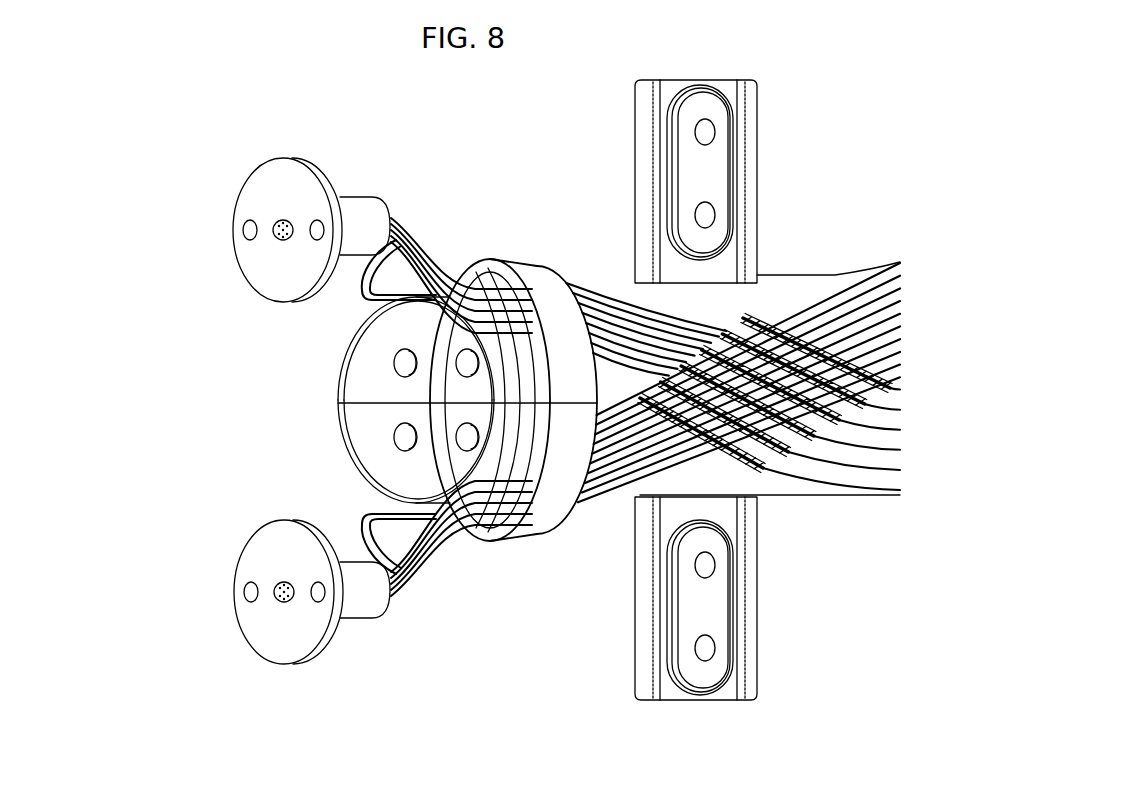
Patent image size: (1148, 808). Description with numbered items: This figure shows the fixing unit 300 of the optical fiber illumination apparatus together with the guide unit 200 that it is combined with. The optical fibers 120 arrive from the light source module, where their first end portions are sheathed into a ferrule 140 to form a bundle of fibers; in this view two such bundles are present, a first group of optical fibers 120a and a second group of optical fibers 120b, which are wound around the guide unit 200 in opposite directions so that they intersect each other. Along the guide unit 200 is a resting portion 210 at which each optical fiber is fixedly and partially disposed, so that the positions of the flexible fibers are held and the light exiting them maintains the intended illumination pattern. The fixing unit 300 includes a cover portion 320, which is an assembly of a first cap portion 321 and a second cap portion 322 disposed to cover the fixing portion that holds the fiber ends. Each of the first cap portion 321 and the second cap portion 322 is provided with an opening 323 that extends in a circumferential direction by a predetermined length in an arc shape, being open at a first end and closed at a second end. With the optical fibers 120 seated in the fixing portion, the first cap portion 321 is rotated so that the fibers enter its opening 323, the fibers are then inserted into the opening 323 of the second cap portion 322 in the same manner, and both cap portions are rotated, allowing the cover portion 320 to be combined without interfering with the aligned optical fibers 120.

The ferrule 140 is at (275, 183).
The optical fibers 120 is at (441, 397).
The first group of optical fibers 120a is at (403, 577).
The second group of optical fibers 120b is at (405, 230).
The fixing unit 300 is at (518, 253).
The cover portion 320 is at (346, 447).
The first cap portion 321 is at (362, 368).
The second cap portion 322 is at (362, 433).
The opening 323 is at (510, 450).
The guide unit 200 is at (830, 270).
The resting portion 210 is at (763, 470).